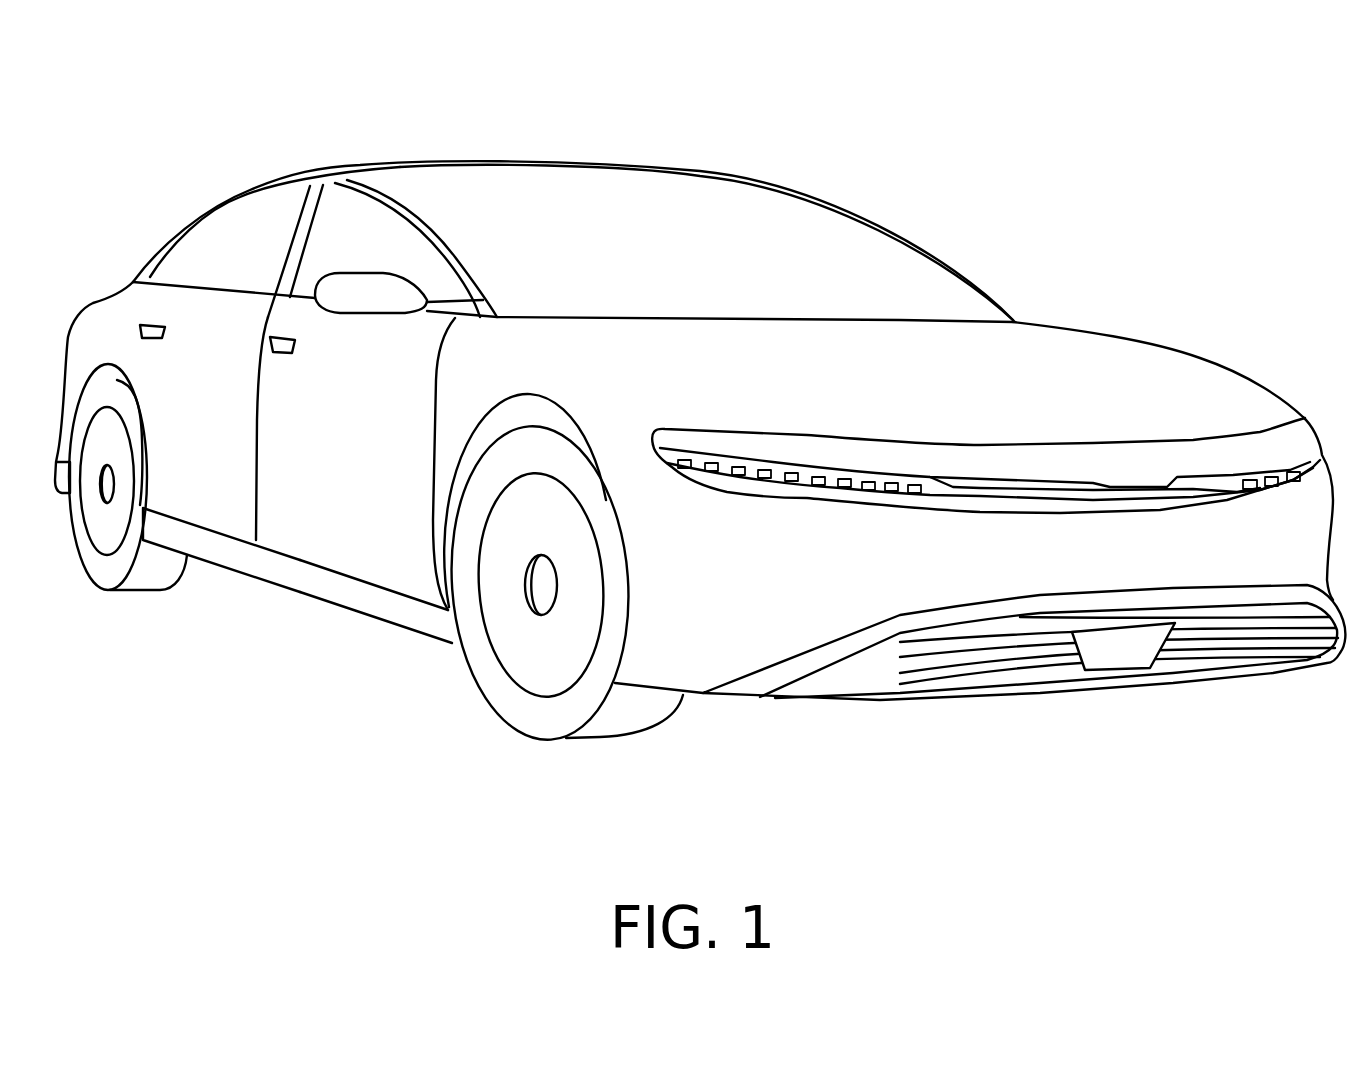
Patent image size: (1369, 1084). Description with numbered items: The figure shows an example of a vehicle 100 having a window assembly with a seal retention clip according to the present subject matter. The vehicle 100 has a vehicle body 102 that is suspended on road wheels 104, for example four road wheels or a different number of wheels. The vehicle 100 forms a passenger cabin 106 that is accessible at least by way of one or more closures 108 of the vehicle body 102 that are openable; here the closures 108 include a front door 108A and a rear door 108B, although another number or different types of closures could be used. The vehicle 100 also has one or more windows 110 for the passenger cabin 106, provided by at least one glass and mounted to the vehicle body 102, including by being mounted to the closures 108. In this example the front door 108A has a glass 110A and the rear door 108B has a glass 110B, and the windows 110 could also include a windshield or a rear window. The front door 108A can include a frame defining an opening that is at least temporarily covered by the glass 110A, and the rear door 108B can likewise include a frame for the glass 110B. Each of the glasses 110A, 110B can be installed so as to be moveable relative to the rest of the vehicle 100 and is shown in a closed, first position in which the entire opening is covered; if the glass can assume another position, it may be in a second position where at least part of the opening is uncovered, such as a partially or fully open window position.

The vehicle 100 is at (1141, 112).
The vehicle body 102 is at (1163, 345).
The road wheels 104 is at (530, 737).
The passenger cabin 106 is at (772, 212).
The closures 108 is at (289, 620).
The front door 108A is at (353, 555).
The rear door 108B is at (237, 530).
The windows 110 is at (323, 187).
The glass 110A is at (280, 128).
The glass 110B is at (242, 213).